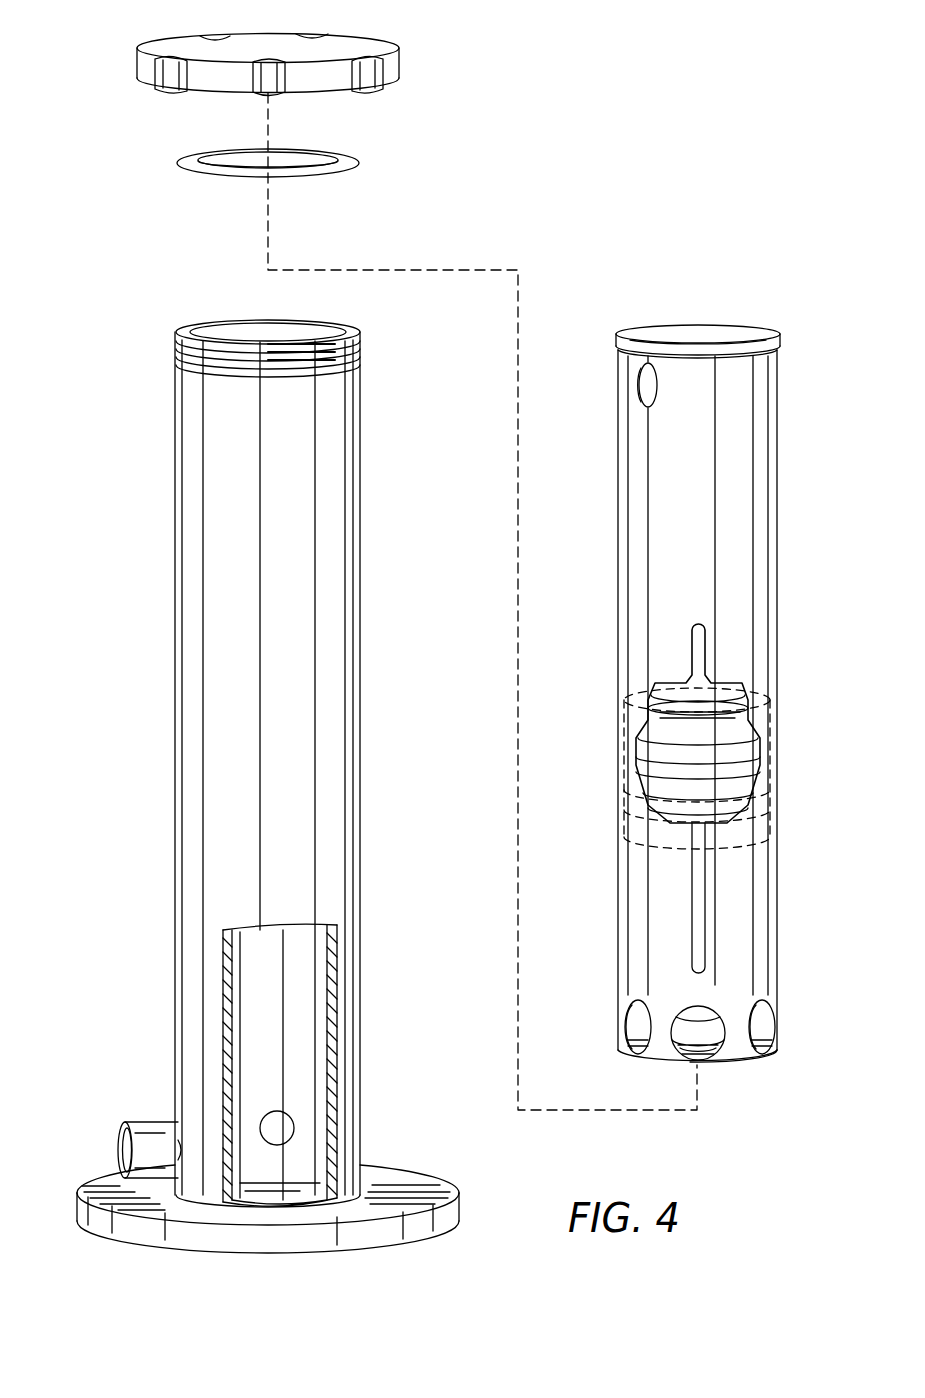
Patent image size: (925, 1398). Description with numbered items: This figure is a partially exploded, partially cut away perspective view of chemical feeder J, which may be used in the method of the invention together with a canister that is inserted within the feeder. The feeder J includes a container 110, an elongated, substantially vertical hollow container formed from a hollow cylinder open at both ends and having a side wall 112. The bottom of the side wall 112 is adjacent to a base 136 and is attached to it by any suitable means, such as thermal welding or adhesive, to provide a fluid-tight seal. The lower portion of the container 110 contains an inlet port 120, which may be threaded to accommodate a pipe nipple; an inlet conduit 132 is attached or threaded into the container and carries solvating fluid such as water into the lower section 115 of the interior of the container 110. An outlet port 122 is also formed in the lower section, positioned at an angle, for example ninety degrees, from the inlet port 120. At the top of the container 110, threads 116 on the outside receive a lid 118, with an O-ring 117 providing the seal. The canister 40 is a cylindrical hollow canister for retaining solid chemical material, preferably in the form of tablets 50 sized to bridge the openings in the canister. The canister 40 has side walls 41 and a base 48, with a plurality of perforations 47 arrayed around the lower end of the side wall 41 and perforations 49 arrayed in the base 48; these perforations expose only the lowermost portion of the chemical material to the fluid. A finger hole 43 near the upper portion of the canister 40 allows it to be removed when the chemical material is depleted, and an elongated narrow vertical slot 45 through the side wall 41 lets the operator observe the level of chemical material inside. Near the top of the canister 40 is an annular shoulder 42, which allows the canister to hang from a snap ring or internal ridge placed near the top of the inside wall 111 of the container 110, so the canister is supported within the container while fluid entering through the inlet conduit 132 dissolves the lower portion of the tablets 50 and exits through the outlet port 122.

The chemical feeder J is at (667, 149).
The lid 118 is at (140, 63).
The O-ring 117 is at (320, 158).
The threads 116 is at (362, 350).
The container 110 is at (254, 763).
The side wall 112 is at (175, 592).
The inside wall 111 is at (175, 679).
The lower section 115 is at (278, 1166).
The outlet port 122 is at (266, 1118).
The inlet port 120 is at (183, 1147).
The inlet conduit 132 is at (136, 1130).
The base 136 is at (76, 1208).
The canister 40 is at (676, 722).
The side walls 41 is at (778, 503).
The annular shoulder 42 is at (616, 345).
The finger hole 43 is at (644, 383).
The tablets 50 is at (663, 803).
The slot 45 is at (707, 908).
The perforations 47 is at (767, 1036).
The perforations 49 is at (712, 1042).
The base 48 is at (745, 1060).